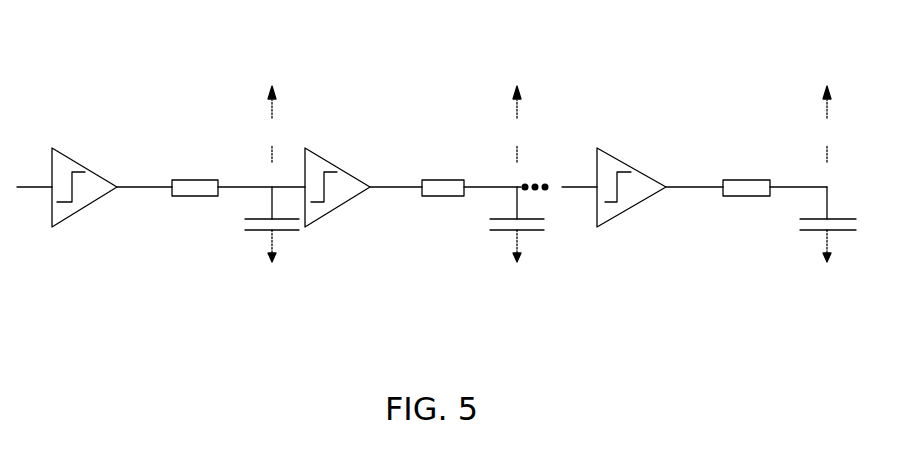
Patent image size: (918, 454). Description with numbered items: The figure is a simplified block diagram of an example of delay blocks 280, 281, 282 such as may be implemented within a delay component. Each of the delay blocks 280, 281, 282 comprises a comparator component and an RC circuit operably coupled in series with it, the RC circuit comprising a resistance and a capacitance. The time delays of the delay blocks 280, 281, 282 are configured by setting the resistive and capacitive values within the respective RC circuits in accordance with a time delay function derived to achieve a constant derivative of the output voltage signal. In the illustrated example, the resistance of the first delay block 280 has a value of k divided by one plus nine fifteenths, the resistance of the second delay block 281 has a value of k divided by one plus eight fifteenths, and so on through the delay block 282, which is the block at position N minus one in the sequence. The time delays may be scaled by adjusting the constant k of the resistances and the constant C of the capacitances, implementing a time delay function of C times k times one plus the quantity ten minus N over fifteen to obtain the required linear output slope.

The first delay block 280 is at (113, 51).
The second delay block 281 is at (390, 51).
The delay block 282 is at (686, 51).